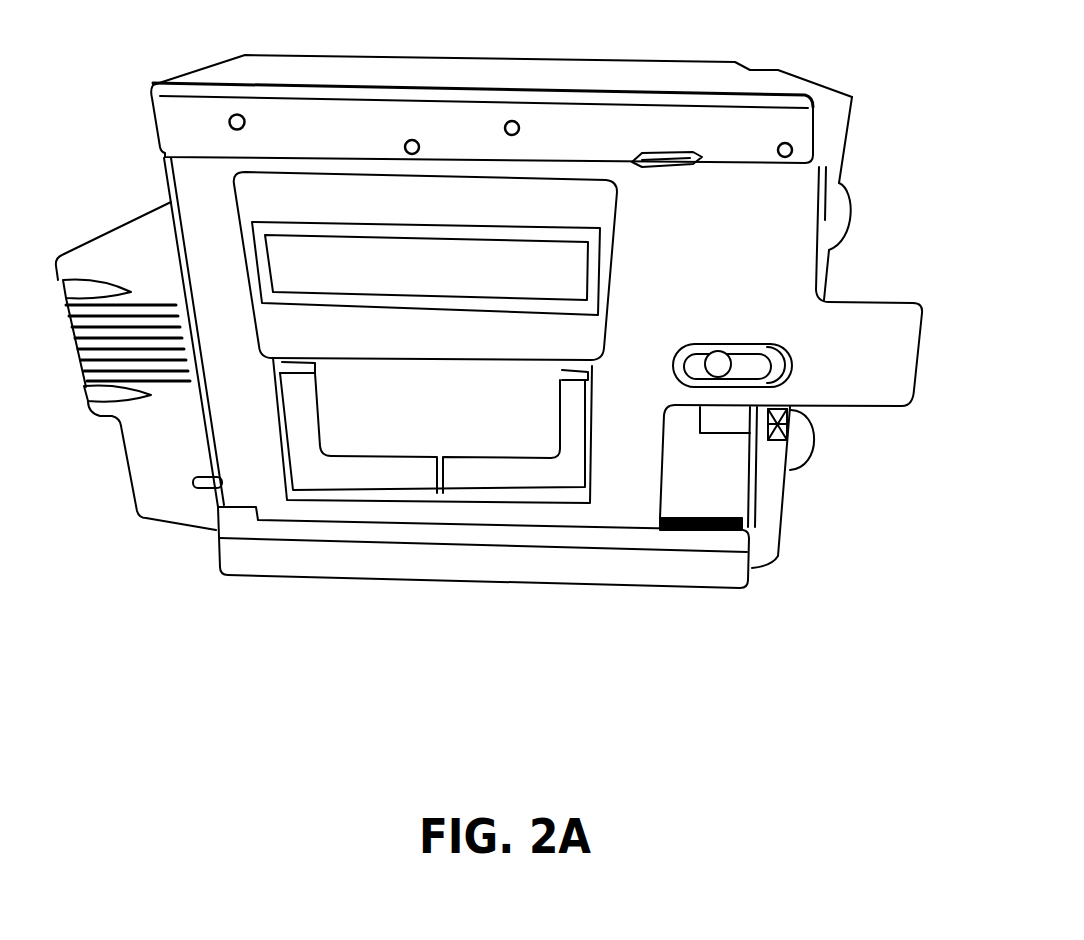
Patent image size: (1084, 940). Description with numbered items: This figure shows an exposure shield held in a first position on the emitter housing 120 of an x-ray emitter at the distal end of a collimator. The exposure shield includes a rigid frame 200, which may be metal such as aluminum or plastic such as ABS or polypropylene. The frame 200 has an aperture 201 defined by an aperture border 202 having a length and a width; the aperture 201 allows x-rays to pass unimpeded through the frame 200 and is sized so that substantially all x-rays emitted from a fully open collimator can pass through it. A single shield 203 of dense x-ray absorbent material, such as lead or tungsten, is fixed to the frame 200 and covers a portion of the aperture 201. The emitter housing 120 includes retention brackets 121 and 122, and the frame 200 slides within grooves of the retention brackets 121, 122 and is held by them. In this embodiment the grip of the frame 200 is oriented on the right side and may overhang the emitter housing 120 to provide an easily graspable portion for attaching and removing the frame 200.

The emitter housing 120 is at (826, 88).
The retention bracket 121 is at (813, 136).
The frame 200 is at (808, 200).
The shield 203 is at (615, 216).
The aperture 201 is at (567, 453).
The aperture border 202 is at (502, 508).
The retention bracket 122 is at (750, 563).